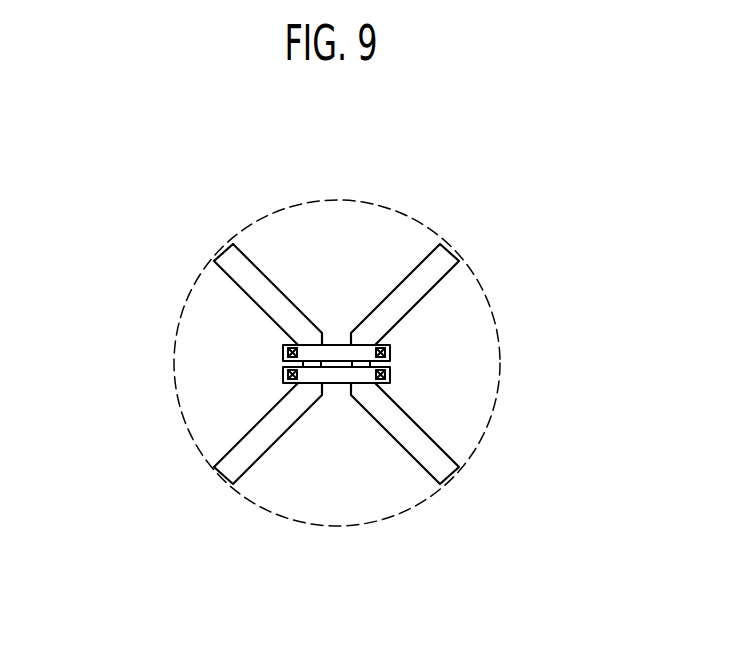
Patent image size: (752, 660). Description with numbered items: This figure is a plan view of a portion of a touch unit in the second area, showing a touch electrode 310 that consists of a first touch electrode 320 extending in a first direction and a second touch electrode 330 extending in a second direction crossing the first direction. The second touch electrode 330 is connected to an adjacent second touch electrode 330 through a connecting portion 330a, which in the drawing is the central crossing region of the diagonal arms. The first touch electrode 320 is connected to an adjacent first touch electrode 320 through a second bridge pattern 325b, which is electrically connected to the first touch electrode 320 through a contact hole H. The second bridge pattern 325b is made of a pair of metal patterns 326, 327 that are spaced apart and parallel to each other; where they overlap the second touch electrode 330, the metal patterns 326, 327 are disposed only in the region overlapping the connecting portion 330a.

The touch electrode 310 is at (561, 197).
The first touch electrode 320 is at (473, 290).
The second touch electrode 330 is at (384, 390).
The connecting portion 330a is at (322, 390).
The second bridge pattern 325b is at (112, 362).
The metal pattern 326 is at (329, 356).
The metal pattern 327 is at (283, 375).
The contact hole H is at (385, 353).